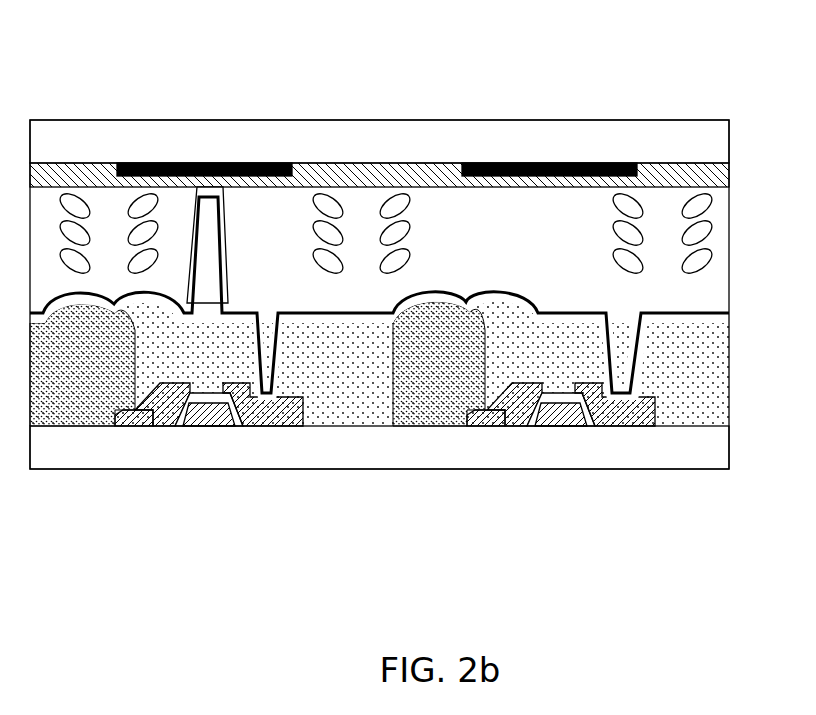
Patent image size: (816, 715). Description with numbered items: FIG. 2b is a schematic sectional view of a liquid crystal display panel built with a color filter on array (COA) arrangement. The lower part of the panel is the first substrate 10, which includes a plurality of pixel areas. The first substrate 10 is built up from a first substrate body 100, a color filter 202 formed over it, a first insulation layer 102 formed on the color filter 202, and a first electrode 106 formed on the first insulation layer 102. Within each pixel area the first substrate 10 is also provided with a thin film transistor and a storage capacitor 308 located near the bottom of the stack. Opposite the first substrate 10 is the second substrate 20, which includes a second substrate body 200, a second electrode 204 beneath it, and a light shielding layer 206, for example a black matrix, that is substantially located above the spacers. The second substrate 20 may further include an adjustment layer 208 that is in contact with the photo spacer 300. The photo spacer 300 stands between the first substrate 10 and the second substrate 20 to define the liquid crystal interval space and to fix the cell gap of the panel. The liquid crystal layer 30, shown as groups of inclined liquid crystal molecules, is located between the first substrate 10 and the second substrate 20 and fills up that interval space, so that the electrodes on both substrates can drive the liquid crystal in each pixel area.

The first substrate 10 is at (415, 363).
The second substrate 20 is at (414, 150).
The liquid crystal layer 30 is at (706, 228).
The first substrate body 100 is at (720, 450).
The first insulation layer 102 is at (729, 320).
The first electrode 106 is at (414, 293).
The second substrate body 200 is at (597, 136).
The color filter 202 is at (728, 393).
The second electrode 204 is at (728, 176).
The light shielding layer 206 is at (512, 163).
The adjustment layer 208 is at (385, 449).
The photo spacer 300 is at (222, 226).
The storage capacitor 308 is at (205, 434).